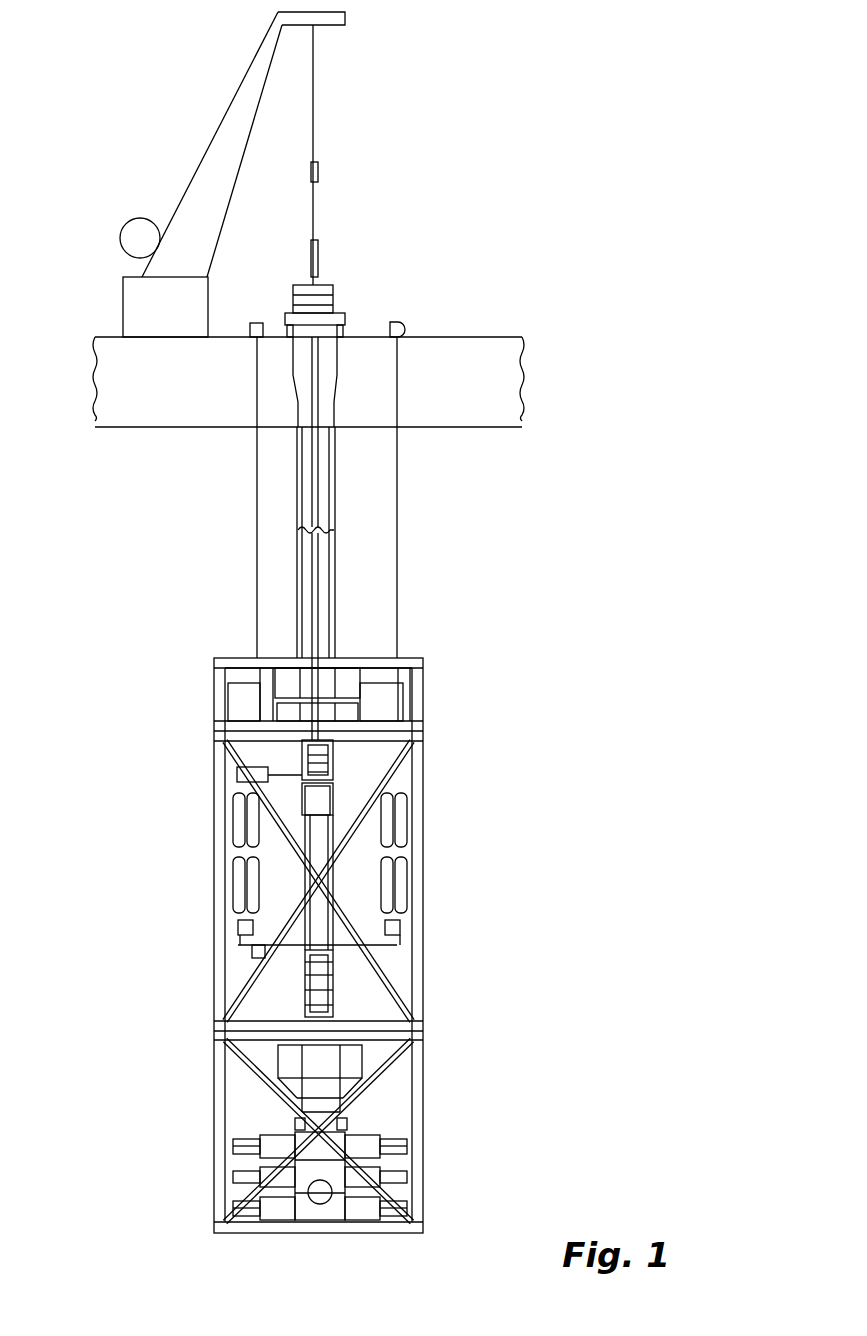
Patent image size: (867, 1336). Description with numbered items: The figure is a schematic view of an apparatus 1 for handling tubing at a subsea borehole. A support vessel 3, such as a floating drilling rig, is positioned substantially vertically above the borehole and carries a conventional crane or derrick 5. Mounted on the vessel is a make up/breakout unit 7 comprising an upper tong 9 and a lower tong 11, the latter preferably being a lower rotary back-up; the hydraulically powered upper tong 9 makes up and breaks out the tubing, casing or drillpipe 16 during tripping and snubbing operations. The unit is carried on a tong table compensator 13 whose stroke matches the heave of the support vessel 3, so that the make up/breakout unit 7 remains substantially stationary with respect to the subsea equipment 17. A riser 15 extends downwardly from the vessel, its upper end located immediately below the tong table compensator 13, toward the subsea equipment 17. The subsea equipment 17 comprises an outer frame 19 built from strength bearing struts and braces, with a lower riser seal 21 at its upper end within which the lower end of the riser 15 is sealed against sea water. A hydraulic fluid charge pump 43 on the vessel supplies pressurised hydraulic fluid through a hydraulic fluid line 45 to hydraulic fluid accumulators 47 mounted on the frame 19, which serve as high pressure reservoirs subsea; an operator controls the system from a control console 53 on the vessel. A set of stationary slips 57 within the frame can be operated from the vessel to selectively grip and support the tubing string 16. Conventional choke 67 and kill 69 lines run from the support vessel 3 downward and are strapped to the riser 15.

The apparatus 1 is at (158, 464).
The support vessel 3 is at (520, 337).
The crane or derrick 5 is at (223, 148).
The make up/breakout unit 7 is at (368, 268).
The upper tong 9 is at (317, 285).
The lower tong 11 is at (340, 307).
The tong table compensator 13 is at (285, 318).
The riser 15 is at (333, 513).
The tubing, casing or drillpipe 16 is at (318, 583).
The subsea equipment 17 is at (452, 825).
The outer frame 19 is at (418, 695).
The lower riser seal 21 is at (348, 683).
The hydraulic fluid charge pump 43 is at (400, 325).
The hydraulic fluid line 45 is at (398, 513).
The hydraulic fluid accumulators 47 is at (237, 880).
The control console 53 is at (252, 328).
The stationary slips 57 is at (330, 987).
The choke line 67 is at (298, 577).
The kill line 69 is at (335, 617).